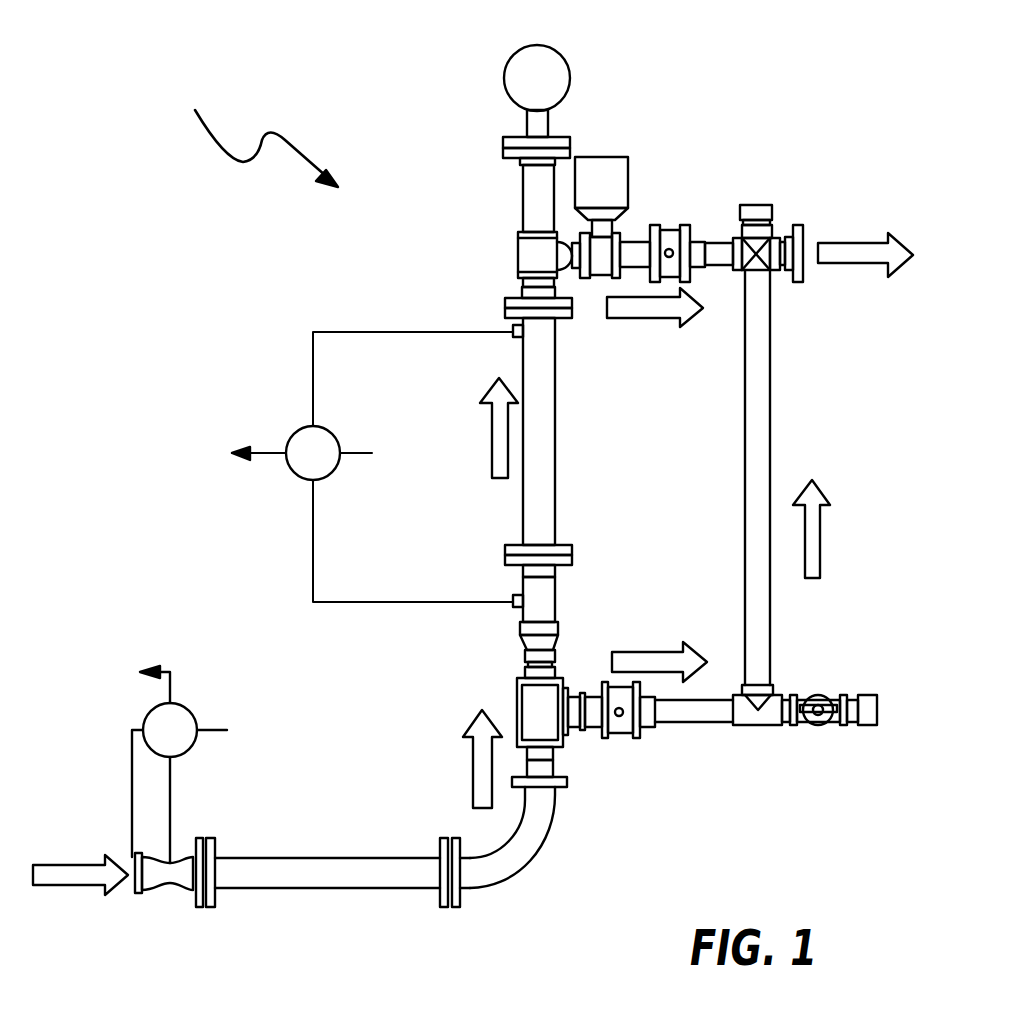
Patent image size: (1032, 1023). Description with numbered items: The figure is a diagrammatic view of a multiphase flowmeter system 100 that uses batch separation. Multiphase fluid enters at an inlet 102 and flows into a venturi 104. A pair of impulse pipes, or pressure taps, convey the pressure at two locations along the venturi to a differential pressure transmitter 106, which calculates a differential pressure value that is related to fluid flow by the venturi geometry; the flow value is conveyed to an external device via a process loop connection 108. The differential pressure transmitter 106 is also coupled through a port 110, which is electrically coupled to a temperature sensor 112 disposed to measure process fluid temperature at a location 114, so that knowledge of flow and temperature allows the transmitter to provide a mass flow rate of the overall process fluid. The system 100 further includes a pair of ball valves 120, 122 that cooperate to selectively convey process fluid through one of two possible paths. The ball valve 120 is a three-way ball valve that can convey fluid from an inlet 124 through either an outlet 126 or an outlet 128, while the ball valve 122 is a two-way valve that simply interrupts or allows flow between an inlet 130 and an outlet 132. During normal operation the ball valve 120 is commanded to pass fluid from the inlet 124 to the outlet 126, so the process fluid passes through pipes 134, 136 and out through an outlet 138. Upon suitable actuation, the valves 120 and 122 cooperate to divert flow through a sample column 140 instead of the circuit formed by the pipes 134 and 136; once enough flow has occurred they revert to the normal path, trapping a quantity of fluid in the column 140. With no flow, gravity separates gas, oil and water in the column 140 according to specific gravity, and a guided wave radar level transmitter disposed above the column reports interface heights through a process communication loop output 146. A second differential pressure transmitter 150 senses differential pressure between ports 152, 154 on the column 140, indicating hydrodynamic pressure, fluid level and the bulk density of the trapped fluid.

The system 100 is at (258, 136).
The inlet 102 is at (75, 887).
The venturi 104 is at (170, 888).
The differential pressure transmitter 106 is at (184, 707).
The process loop connection 108 is at (168, 668).
The port 110 is at (215, 730).
The temperature sensor 112 is at (621, 717).
The location 114 is at (603, 687).
The ball valve 120 is at (517, 705).
The ball valve 122 is at (630, 178).
The inlet 124 is at (556, 752).
The outlet 126 is at (575, 690).
The outlet 128 is at (523, 673).
The inlet 130 is at (575, 270).
The outlet 132 is at (627, 233).
The pipe 134 is at (720, 697).
The pipe 136 is at (770, 433).
The outlet 138 is at (776, 238).
The sample column 140 is at (557, 455).
The process communication loop output 146 is at (522, 50).
The second differential pressure transmitter 150 is at (325, 477).
The port 152 is at (515, 338).
The port 154 is at (513, 598).